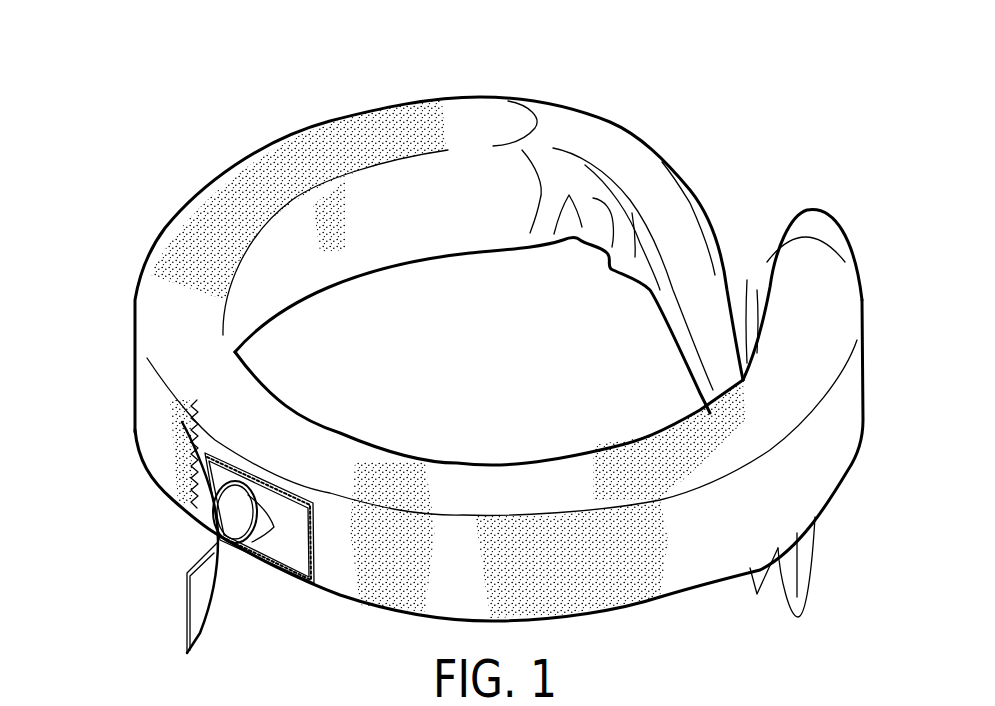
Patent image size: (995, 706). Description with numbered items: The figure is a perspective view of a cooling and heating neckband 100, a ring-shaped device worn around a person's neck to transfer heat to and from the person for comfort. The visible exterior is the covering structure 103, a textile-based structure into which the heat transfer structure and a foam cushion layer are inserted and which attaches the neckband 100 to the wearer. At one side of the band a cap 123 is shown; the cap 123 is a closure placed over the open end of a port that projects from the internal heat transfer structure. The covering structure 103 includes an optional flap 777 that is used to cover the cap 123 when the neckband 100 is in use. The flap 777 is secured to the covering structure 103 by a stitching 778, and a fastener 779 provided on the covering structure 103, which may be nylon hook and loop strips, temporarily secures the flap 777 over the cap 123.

The cooling and heating neckband 100 is at (152, 101).
The covering structure 103 is at (682, 217).
The flap 777 is at (212, 528).
The stitching 778 is at (184, 488).
The fastener 779 is at (310, 553).
The cap 123 is at (232, 530).